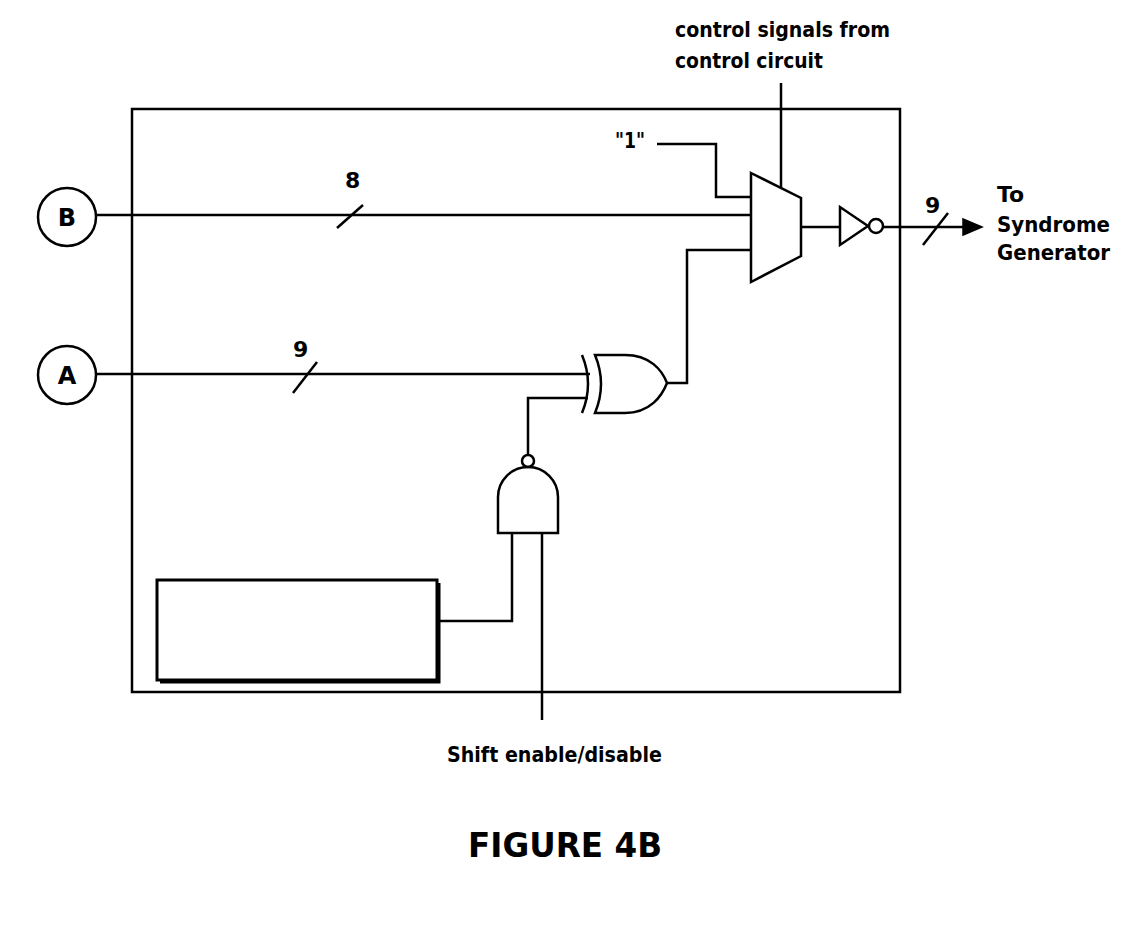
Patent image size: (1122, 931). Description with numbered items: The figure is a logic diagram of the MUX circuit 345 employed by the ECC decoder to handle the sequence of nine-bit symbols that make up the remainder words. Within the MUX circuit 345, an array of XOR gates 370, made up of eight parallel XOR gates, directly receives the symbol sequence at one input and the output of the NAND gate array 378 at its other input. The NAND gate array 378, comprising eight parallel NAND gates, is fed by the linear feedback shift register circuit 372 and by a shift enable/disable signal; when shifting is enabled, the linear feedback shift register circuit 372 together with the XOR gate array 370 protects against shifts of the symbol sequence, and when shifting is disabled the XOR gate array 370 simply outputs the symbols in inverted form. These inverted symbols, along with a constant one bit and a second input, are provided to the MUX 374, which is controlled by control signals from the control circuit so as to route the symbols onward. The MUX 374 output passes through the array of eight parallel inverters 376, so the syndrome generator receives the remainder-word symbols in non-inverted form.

The MUX circuit 345 is at (291, 110).
The array of XOR gates 370 is at (657, 402).
The linear feedback shift register circuit 372 is at (228, 580).
The MUX 374 is at (778, 268).
The array of parallel inverters 376 is at (855, 235).
The NAND gate array 378 is at (498, 498).